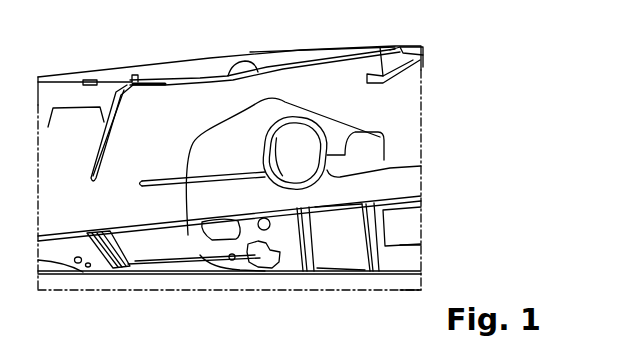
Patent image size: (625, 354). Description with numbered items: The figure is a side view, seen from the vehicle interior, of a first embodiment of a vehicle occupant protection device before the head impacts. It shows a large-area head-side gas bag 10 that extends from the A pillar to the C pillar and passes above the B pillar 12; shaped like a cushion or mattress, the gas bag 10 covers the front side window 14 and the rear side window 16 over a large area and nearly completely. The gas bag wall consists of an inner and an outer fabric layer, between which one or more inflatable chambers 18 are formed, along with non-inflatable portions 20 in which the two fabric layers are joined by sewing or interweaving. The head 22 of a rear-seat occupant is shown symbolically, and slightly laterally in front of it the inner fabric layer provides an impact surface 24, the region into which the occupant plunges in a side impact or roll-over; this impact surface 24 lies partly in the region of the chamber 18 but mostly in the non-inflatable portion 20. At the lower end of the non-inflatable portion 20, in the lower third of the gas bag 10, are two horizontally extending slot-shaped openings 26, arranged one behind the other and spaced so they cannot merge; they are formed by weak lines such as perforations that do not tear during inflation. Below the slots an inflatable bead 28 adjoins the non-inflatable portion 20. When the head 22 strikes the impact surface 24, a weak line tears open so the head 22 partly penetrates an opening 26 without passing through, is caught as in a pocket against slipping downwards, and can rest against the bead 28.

The head-side gas bag 10 is at (408, 140).
The B pillar 12 is at (342, 258).
The front side window 14 is at (412, 214).
The rear side window 16 is at (211, 250).
The inflatable chamber 18 is at (162, 105).
The non-inflatable portion 20 is at (262, 118).
The head 22 is at (337, 121).
The impact surface 24 is at (244, 136).
The elongated openings 26 is at (400, 170).
The inflatable bead 28 is at (280, 212).